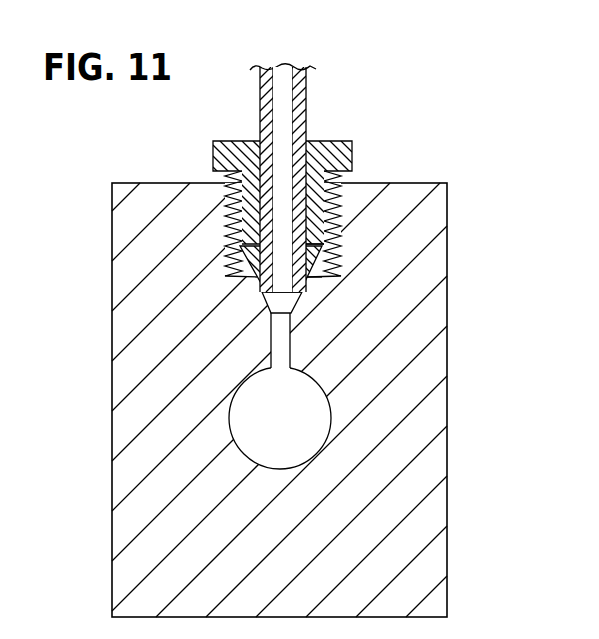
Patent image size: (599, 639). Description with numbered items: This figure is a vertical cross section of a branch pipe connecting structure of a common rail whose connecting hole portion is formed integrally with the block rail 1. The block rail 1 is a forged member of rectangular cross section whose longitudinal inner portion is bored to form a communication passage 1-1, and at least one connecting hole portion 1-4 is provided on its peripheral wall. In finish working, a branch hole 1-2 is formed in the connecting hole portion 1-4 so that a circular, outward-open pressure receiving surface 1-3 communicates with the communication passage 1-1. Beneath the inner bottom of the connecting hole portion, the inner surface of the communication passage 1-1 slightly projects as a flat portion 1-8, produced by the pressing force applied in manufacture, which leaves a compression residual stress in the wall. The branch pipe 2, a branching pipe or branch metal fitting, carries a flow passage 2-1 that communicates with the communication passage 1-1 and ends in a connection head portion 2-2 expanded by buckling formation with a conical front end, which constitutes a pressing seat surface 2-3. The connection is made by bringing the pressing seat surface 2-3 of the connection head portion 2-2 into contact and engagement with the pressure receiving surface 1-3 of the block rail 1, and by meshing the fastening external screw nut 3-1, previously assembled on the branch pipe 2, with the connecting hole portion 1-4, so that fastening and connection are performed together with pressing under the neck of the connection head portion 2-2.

The block rail 1 is at (427, 367).
The communication passage 1-1 is at (327, 430).
The branch hole 1-2 is at (266, 368).
The pressure receiving surface 1-3 is at (300, 304).
The connecting hole portion 1-4 is at (238, 250).
The flat portion 1-8 is at (298, 368).
The branch pipe 2 is at (307, 90).
The flow passage 2-1 is at (282, 66).
The connection head portion 2-2 is at (318, 247).
The pressing seat surface 2-3 is at (330, 278).
The fastening external screw nut 3-1 is at (347, 153).